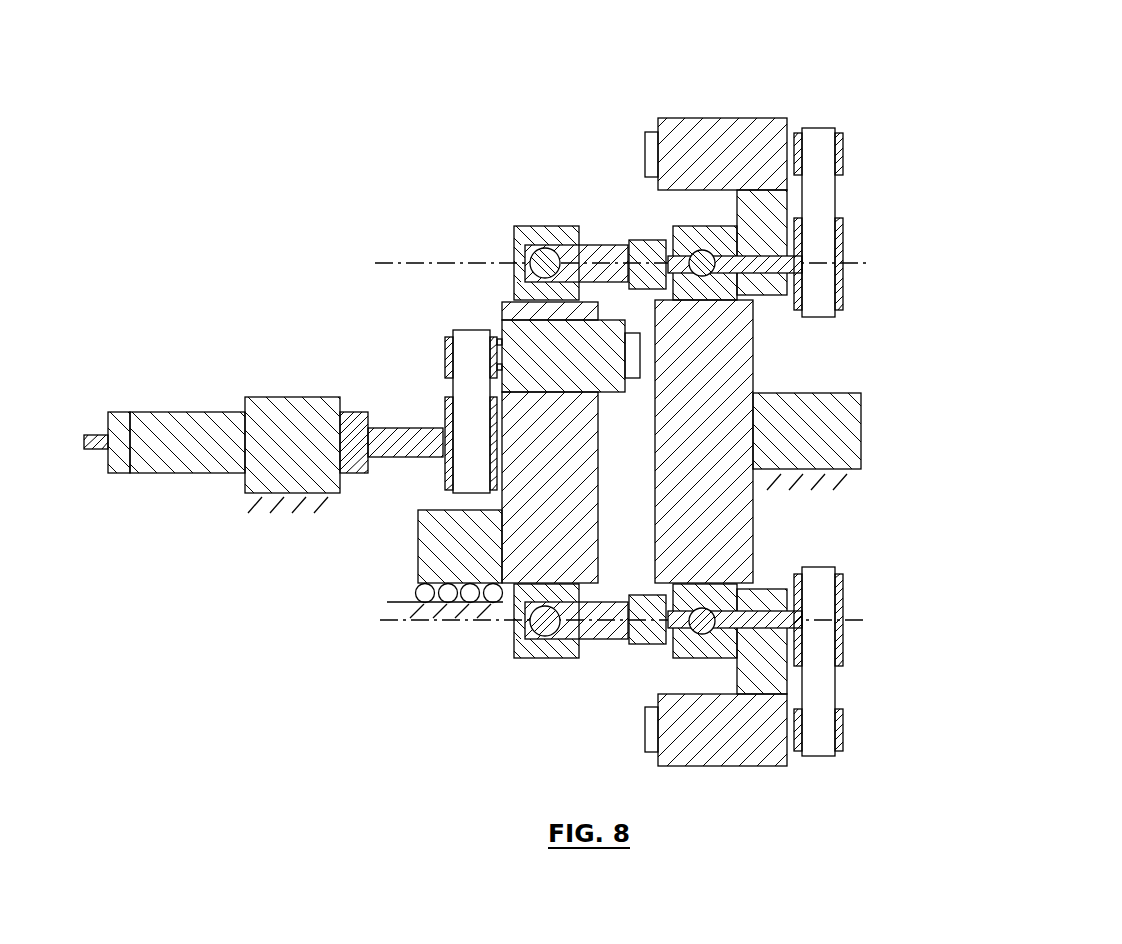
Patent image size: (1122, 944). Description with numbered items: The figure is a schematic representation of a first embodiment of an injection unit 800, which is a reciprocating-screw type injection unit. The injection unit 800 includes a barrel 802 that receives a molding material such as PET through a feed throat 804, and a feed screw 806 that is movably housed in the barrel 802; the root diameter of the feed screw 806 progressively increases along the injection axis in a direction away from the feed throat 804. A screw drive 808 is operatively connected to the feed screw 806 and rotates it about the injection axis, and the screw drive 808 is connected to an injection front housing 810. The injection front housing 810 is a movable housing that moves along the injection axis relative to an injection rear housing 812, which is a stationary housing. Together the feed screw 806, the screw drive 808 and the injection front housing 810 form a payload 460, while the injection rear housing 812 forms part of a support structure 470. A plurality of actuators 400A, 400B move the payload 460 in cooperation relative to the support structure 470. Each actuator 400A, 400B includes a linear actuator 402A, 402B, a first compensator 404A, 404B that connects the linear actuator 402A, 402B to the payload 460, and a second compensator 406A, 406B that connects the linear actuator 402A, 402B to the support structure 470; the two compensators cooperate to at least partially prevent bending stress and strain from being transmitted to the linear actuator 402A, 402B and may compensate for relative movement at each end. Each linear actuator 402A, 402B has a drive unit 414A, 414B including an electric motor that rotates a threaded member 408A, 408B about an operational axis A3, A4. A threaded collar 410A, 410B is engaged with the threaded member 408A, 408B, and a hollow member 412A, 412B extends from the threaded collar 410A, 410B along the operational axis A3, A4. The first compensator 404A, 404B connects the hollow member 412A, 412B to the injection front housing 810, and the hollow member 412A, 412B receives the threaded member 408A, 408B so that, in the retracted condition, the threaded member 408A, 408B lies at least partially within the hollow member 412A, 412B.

The injection unit 800 is at (1016, 144).
The actuator 400A is at (597, 107).
The actuator 400B is at (537, 761).
The linear actuator 402A is at (633, 202).
The linear actuator 402B is at (596, 662).
The first compensator 404A is at (535, 258).
The first compensator 404B is at (520, 628).
The second compensator 406A is at (703, 276).
The second compensator 406B is at (710, 606).
The threaded member 408A is at (768, 268).
The threaded member 408B is at (812, 630).
The threaded collar 410A is at (642, 238).
The threaded collar 410B is at (650, 647).
The hollow member 412A is at (575, 248).
The hollow member 412B is at (565, 658).
The drive unit 414A is at (873, 161).
The drive unit 414B is at (866, 723).
The payload 460 is at (337, 297).
The support structure 470 is at (891, 410).
The barrel 802 is at (190, 430).
The feed throat 804 is at (290, 400).
The feed screw 806 is at (402, 435).
The screw drive 808 is at (515, 326).
The injection front housing 810 is at (520, 542).
The injection rear housing 812 is at (845, 432).
The operational axis A3 is at (868, 263).
The operational axis A4 is at (868, 620).